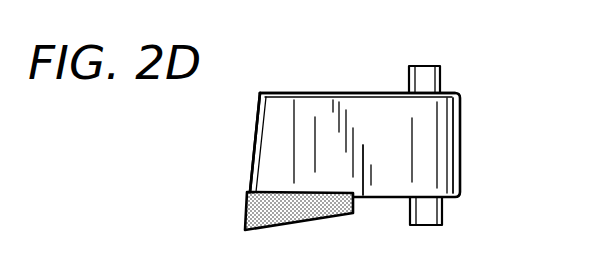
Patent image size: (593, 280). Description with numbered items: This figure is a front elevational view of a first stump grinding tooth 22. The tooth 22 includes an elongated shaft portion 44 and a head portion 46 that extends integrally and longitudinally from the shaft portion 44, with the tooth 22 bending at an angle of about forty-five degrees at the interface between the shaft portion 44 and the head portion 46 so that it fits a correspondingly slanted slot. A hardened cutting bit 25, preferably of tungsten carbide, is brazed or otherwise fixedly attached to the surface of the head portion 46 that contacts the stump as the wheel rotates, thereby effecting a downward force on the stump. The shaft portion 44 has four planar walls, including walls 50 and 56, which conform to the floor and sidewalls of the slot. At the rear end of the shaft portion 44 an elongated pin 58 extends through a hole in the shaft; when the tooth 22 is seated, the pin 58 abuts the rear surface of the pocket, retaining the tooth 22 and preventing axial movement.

The tooth 22 is at (467, 177).
The hardened cutting bit 25 is at (249, 207).
The shaft portion 44 is at (443, 163).
The head portion 46 is at (257, 132).
The planar wall 50 is at (287, 91).
The planar wall 56 is at (368, 183).
The elongated pin 58 is at (437, 82).